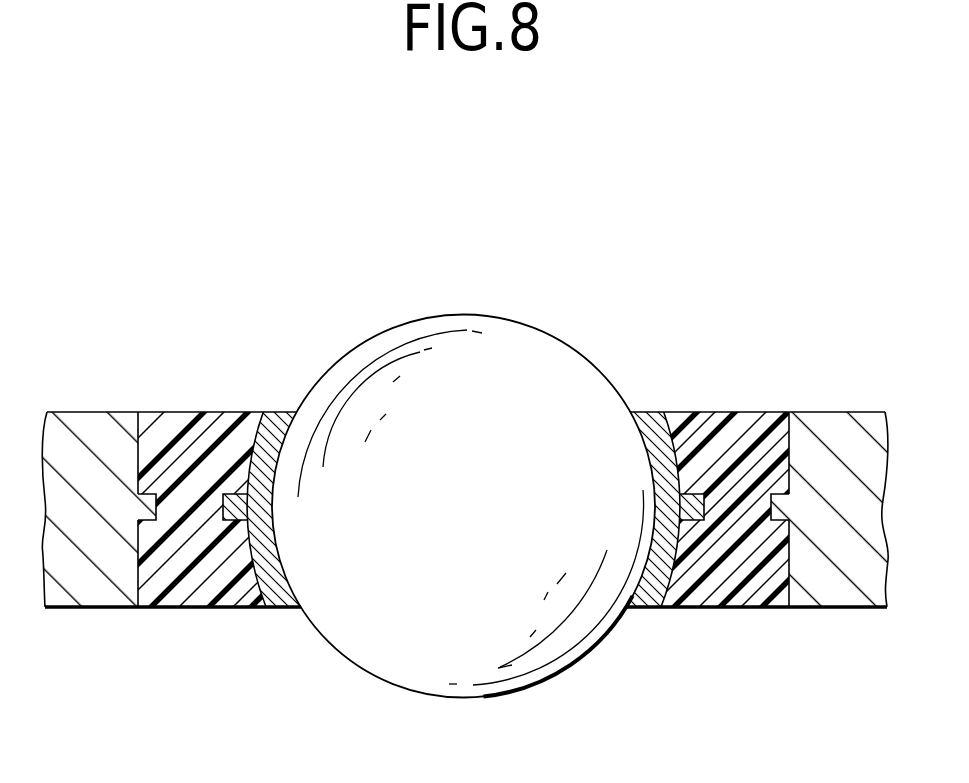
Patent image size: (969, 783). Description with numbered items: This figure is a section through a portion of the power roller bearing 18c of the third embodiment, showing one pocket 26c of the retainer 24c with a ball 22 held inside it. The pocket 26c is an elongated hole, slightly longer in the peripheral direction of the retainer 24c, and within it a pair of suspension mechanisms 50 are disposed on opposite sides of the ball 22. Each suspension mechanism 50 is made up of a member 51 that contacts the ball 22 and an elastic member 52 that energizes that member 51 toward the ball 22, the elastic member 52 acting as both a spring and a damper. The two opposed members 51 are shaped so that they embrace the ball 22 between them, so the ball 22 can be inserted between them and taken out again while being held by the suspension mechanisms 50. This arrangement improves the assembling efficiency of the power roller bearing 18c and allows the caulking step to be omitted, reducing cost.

The power roller bearing 18c is at (825, 260).
The ball 22 is at (524, 343).
The retainer 24c is at (842, 411).
The pocket 26c is at (627, 607).
The suspension mechanism 50 is at (199, 400).
The member to be contacted with the ball 51 is at (277, 411).
The elastic member 52 is at (198, 608).